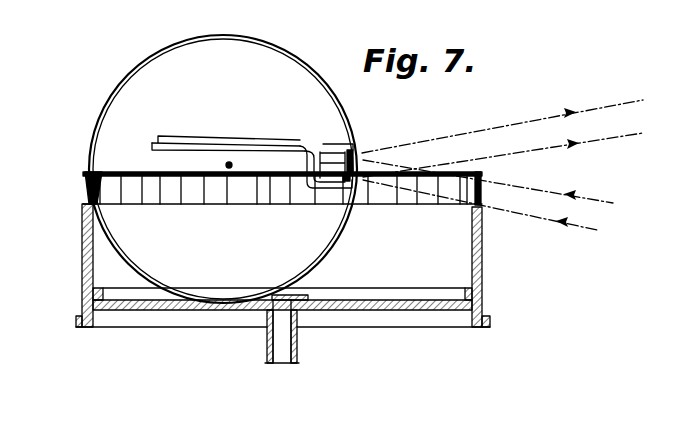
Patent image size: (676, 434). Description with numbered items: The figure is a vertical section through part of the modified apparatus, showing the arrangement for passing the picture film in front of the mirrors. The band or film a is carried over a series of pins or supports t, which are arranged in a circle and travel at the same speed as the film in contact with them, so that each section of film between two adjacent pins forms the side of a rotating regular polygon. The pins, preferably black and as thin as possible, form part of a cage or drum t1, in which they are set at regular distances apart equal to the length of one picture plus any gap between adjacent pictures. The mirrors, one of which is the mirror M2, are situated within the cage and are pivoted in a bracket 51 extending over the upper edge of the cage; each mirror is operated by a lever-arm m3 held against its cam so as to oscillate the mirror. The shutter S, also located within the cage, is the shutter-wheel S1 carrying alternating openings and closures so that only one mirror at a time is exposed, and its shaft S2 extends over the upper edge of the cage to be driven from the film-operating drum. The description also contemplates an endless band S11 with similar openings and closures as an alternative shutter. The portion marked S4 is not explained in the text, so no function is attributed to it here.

The shutter-wheel S is at (111, 103).
The shutter-wheel S1 is at (353, 233).
The endless band S11 is at (168, 99).
The shaft S2 is at (229, 164).
The shell opening S4 is at (325, 103).
The bracket 51 is at (205, 143).
The lever-arm m3 is at (321, 158).
The mirror M2 is at (362, 148).
The pins or supports t is at (253, 206).
The cage or drum t1 is at (283, 283).
The band or film a is at (482, 189).